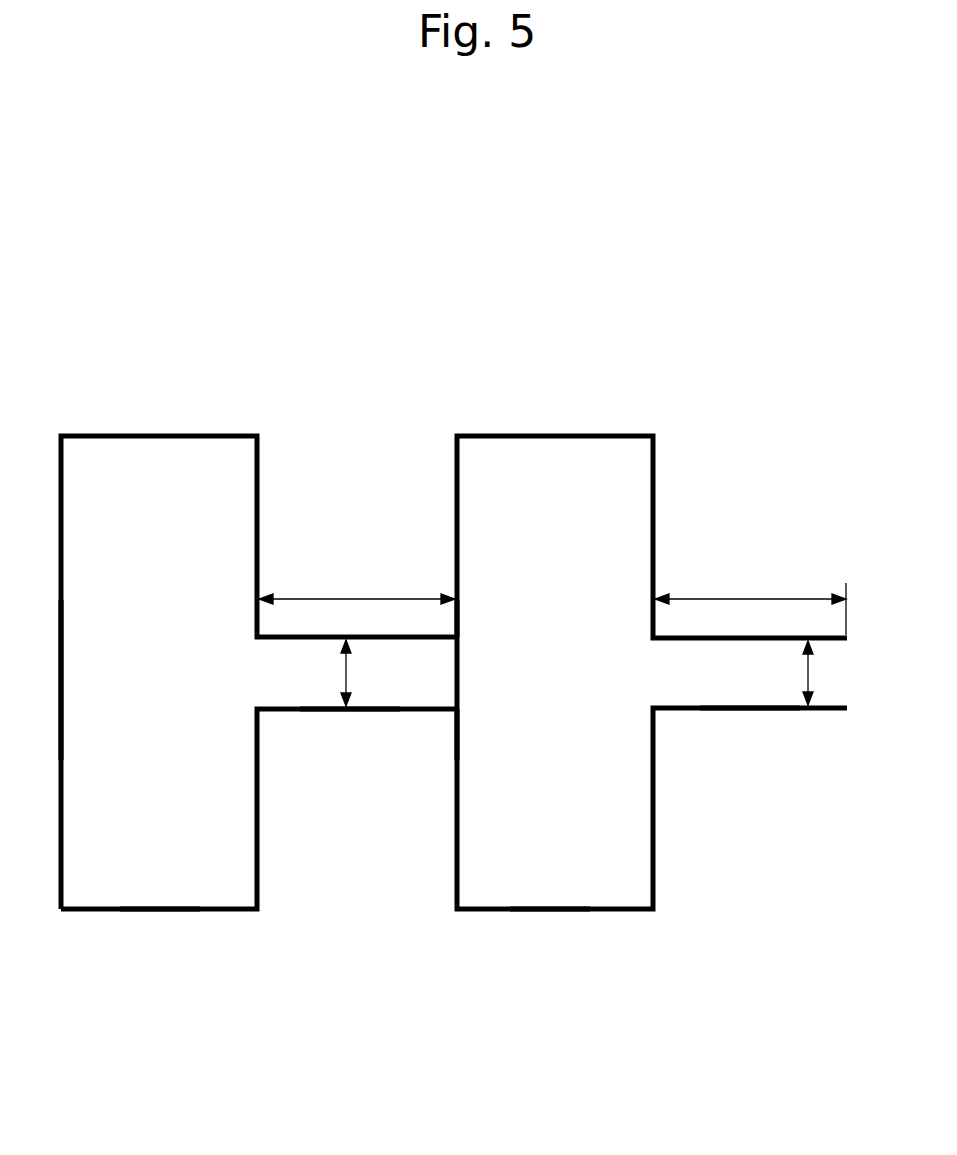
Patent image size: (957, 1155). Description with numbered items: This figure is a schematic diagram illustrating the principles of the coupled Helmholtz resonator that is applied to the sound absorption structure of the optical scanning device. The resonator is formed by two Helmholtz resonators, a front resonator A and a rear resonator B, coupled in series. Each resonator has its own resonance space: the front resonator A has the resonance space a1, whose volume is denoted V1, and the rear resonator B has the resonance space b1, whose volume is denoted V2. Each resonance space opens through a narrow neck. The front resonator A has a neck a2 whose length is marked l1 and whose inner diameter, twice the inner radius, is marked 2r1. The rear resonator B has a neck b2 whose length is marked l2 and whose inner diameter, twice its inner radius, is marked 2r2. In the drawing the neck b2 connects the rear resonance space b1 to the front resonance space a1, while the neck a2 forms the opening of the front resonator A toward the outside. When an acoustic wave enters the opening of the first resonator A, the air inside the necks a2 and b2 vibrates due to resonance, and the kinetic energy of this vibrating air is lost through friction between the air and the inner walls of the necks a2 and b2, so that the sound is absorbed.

The front resonator A is at (544, 420).
The rear resonator B is at (167, 420).
The resonance space a1 is at (548, 911).
The neck a2 is at (735, 710).
The resonance space b1 is at (157, 911).
The neck b2 is at (341, 712).
The volume of the resonance space a1 V1 is at (514, 680).
The volume of the resonance space b1 V2 is at (123, 680).
The length of the neck a2 l1 is at (750, 595).
The length of the neck b2 l2 is at (357, 579).
The inner diameter of the neck a2 2r1 is at (835, 673).
The inner diameter of the neck b2 2r2 is at (373, 673).